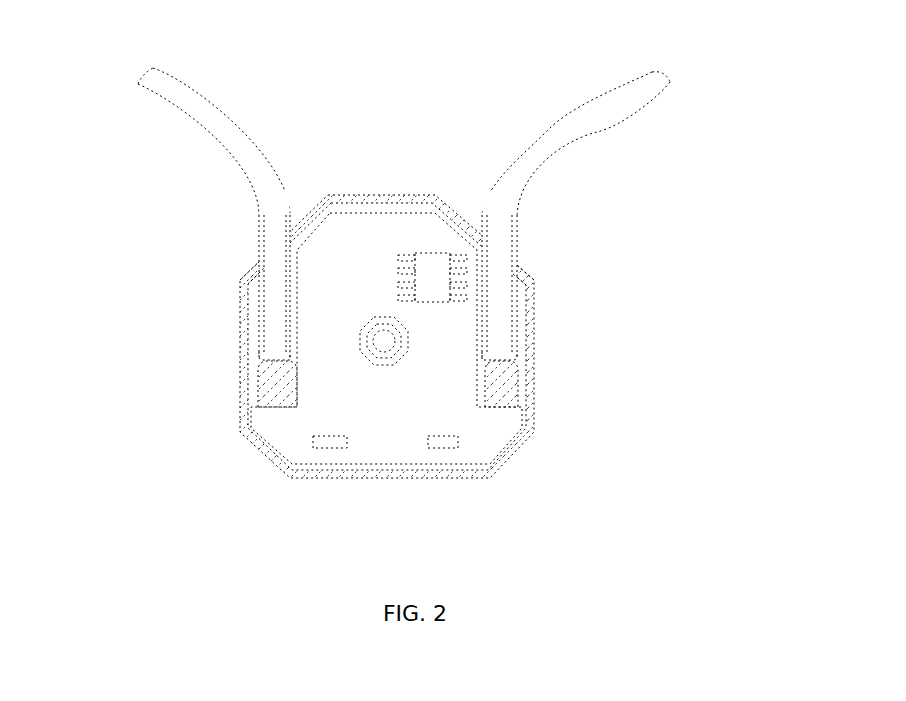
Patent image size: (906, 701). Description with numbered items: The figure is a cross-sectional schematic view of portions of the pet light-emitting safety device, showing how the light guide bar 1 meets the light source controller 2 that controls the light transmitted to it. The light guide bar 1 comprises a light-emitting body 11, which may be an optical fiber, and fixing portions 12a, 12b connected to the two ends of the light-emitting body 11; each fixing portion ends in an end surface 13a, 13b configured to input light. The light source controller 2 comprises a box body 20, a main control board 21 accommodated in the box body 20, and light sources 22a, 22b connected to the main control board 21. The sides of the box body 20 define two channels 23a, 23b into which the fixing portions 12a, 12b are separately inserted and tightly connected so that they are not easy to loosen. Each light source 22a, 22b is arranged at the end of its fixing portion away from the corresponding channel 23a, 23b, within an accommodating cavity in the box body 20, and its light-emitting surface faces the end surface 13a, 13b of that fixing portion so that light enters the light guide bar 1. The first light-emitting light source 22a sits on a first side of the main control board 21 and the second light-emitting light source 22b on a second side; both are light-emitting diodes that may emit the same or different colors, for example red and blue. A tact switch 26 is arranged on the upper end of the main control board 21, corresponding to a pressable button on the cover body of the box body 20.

The light guide bar 1 is at (409, 129).
The light-emitting body 11 is at (162, 90).
The light source controller 2 is at (381, 381).
The box body 20 is at (518, 443).
The main control board 21 is at (468, 450).
The fixing portion 12a is at (280, 301).
The fixing portion 12b is at (503, 313).
The end surface 13a is at (268, 360).
The end surface 13b is at (497, 360).
The first light-emitting light source 22a is at (273, 385).
The second light-emitting light source 22b is at (507, 378).
The channel 23a is at (260, 276).
The channel 23b is at (516, 290).
The tact switch 26 is at (373, 362).